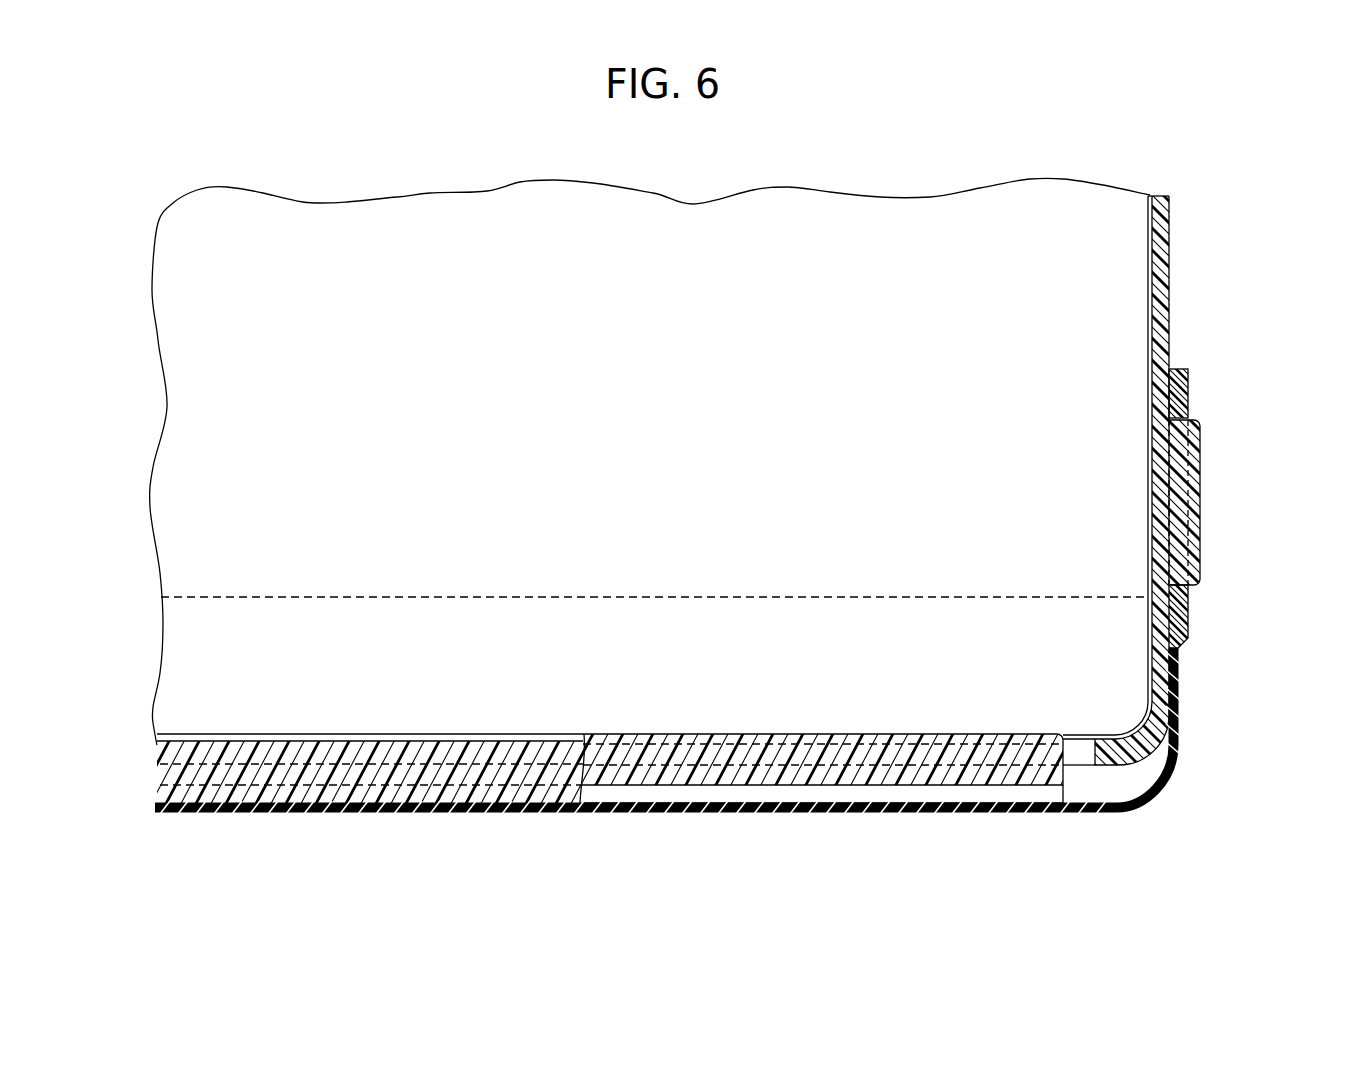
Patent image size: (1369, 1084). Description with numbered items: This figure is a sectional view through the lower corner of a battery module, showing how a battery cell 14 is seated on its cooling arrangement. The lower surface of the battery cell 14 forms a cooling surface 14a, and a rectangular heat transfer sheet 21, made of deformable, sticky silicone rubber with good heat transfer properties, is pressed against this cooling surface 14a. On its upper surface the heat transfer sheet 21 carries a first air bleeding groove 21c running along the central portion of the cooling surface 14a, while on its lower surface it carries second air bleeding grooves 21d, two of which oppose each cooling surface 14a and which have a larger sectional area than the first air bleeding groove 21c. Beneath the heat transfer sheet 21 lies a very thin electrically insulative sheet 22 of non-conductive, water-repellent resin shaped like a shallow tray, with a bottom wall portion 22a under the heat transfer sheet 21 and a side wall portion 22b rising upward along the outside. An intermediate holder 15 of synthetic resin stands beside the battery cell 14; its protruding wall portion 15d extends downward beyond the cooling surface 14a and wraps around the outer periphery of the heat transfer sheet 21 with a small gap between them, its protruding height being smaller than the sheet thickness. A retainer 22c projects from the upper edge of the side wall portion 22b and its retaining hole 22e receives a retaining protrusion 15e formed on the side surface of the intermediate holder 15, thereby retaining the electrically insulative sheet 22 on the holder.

The battery cell 14 is at (240, 468).
The cooling surface 14a is at (775, 748).
The intermediate holder 15 is at (944, 490).
The protruding wall portion 15d is at (1122, 750).
The retaining protrusion 15e is at (1197, 497).
The heat transfer sheet 21 is at (592, 726).
The first air bleeding groove 21c is at (280, 742).
The second air bleeding groove 21d is at (852, 792).
The electrically insulative sheet 22 is at (724, 631).
The bottom wall portion 22a is at (528, 805).
The side wall portion 22b is at (1177, 707).
The retainer 22c is at (1183, 395).
The retaining hole 22e is at (1172, 597).